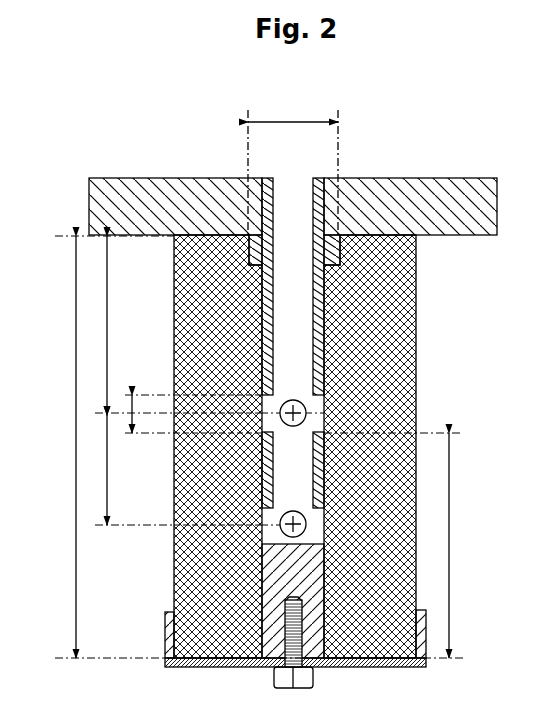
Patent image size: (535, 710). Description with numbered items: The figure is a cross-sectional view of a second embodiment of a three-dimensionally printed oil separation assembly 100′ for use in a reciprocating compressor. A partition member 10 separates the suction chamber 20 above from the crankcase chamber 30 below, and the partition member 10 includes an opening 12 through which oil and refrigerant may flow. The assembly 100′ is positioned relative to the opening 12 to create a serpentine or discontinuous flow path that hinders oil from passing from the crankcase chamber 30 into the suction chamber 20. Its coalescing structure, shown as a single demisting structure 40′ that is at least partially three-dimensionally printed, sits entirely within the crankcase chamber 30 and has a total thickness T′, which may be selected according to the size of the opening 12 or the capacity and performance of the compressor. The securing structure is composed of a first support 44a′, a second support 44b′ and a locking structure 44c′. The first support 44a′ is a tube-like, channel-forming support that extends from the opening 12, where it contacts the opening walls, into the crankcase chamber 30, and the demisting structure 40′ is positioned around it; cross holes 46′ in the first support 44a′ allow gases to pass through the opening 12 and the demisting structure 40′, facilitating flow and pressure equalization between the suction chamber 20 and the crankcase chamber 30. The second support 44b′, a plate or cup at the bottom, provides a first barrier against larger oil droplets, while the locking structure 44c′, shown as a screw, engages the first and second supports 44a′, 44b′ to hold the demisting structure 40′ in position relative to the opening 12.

The partition member 10 is at (157, 186).
The opening 12 is at (256, 195).
The suction chamber 20 is at (180, 133).
The crankcase chamber 30 is at (474, 367).
The demisting structure 40′ is at (183, 305).
The first support 44a′ is at (318, 195).
The second support 44b′ is at (228, 667).
The locking structure 44c′ is at (317, 630).
The cross holes 46′ is at (291, 399).
The 3D-printed oil separation assembly 100′ is at (464, 135).
The total thickness T′ is at (75, 408).